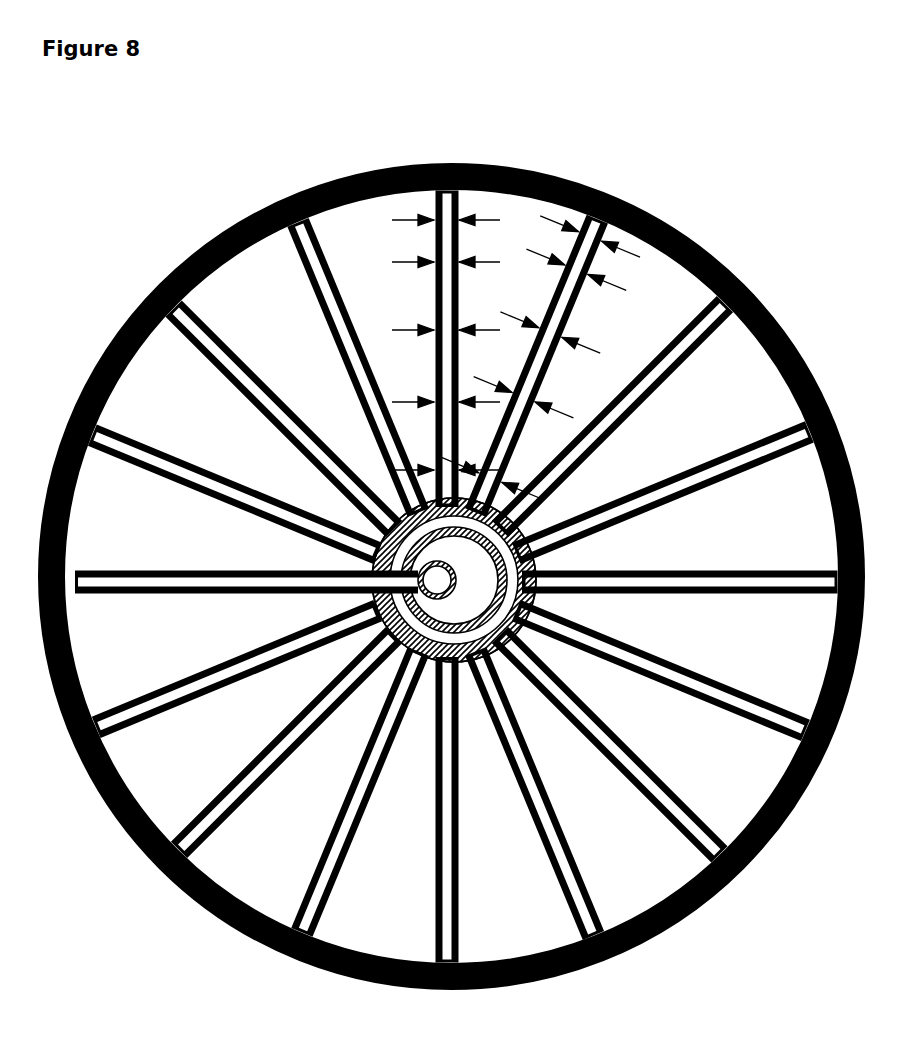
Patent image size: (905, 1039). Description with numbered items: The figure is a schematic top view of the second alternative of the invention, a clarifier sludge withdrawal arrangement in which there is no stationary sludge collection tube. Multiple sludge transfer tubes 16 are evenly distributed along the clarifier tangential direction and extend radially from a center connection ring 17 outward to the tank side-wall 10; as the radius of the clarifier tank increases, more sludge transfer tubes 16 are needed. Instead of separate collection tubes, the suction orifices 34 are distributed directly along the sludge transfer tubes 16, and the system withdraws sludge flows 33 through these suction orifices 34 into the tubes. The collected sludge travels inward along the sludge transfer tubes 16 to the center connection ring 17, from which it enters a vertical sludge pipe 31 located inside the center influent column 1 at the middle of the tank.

The center influent column 1 is at (527, 627).
The tank side-wall 10 is at (830, 492).
The sludge transfer tubes 16 is at (680, 378).
The center connection ring 17 is at (537, 566).
The vertical sludge pipe 31 is at (452, 580).
The sludge flows 33 is at (415, 331).
The suction orifices 34 is at (458, 263).